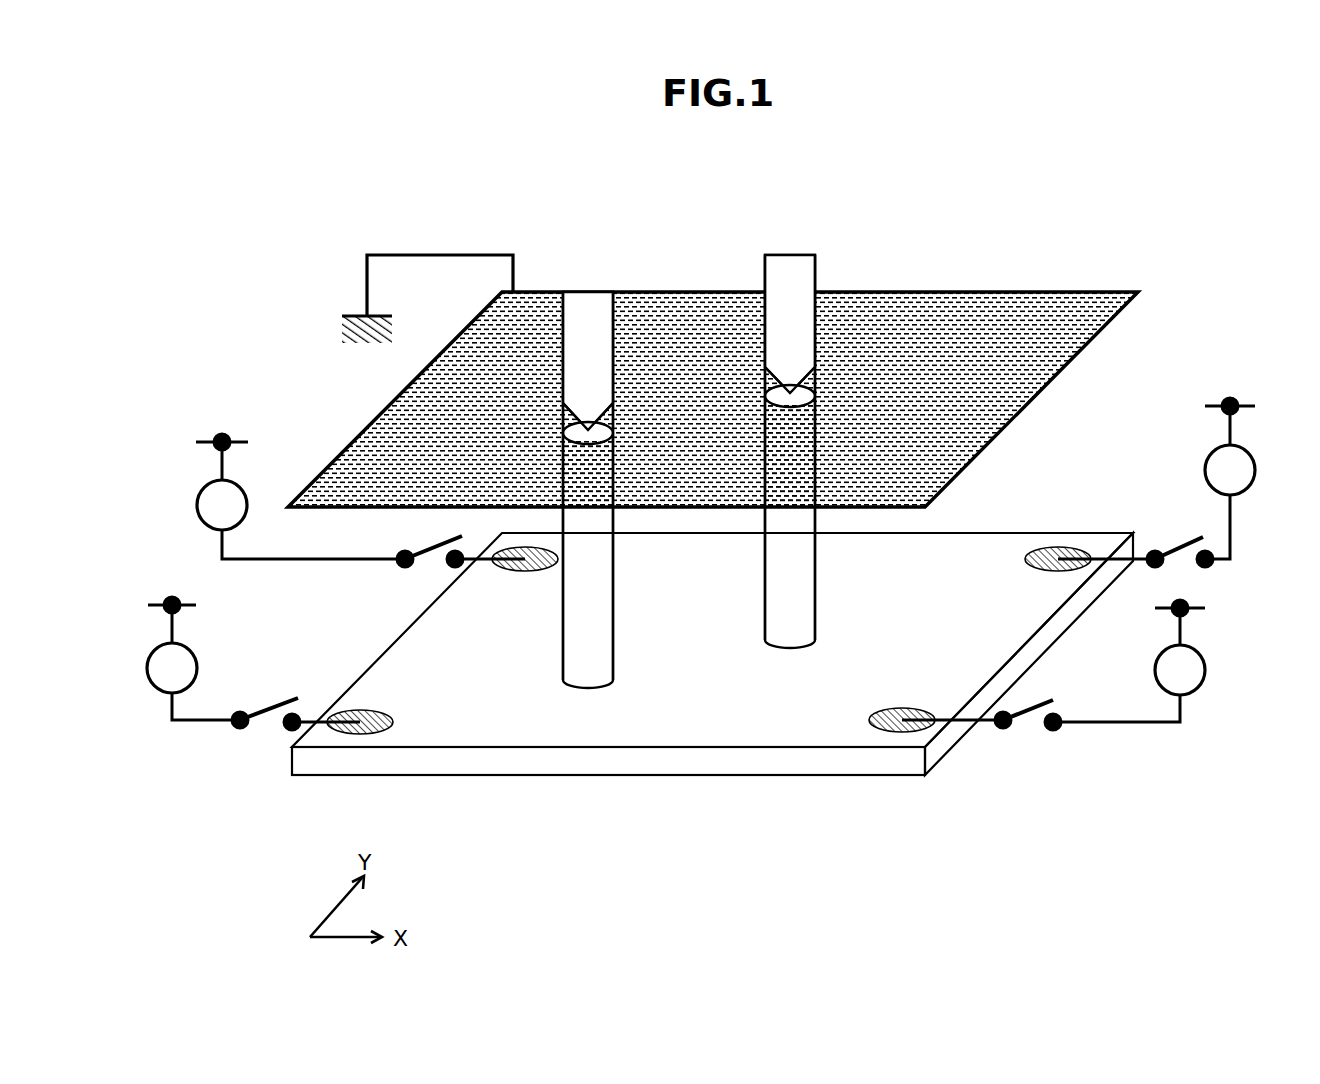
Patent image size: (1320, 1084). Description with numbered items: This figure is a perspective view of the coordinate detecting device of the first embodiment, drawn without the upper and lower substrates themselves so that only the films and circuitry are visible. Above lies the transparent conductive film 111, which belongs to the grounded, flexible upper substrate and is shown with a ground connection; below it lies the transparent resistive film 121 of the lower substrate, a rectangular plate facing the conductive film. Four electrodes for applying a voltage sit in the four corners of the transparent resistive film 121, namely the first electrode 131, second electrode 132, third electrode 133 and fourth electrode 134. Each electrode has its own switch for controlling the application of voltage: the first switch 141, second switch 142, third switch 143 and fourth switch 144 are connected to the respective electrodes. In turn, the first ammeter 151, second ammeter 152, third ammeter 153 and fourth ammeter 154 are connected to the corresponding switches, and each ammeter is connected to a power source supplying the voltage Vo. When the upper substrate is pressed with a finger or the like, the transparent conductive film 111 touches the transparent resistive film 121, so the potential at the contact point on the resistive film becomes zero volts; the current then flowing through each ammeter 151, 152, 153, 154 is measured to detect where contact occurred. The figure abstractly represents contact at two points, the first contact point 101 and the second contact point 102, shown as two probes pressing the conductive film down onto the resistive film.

The first contact point 101 is at (590, 292).
The second contact point 102 is at (790, 255).
The transparent conductive film 111 is at (980, 292).
The transparent resistive film 121 is at (536, 775).
The first electrode 131 is at (358, 733).
The second electrode 132 is at (498, 567).
The third electrode 133 is at (1052, 546).
The fourth electrode 134 is at (890, 733).
The first switch 141 is at (238, 728).
The second switch 142 is at (400, 564).
The third switch 143 is at (1150, 550).
The fourth switch 144 is at (1058, 730).
The first ammeter 151 is at (165, 692).
The second ammeter 152 is at (247, 492).
The third ammeter 153 is at (1205, 462).
The fourth ammeter 154 is at (1200, 695).